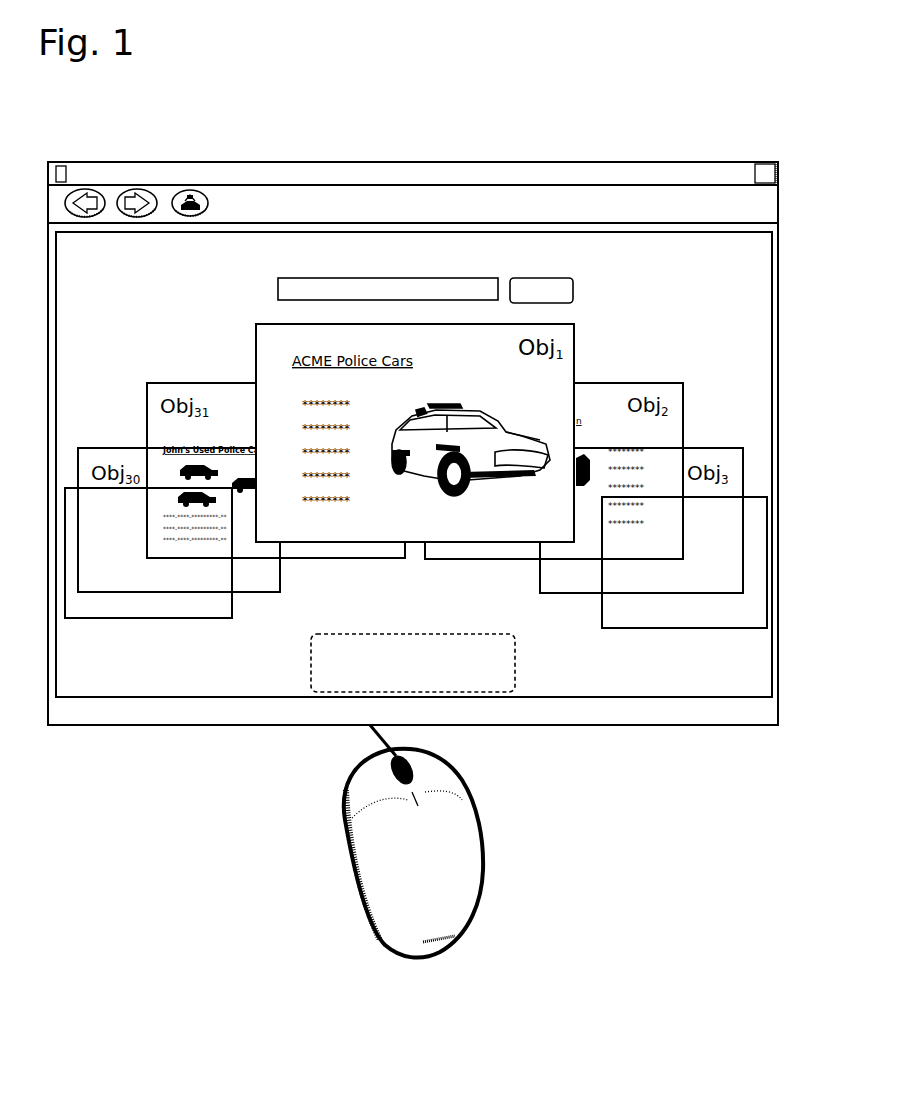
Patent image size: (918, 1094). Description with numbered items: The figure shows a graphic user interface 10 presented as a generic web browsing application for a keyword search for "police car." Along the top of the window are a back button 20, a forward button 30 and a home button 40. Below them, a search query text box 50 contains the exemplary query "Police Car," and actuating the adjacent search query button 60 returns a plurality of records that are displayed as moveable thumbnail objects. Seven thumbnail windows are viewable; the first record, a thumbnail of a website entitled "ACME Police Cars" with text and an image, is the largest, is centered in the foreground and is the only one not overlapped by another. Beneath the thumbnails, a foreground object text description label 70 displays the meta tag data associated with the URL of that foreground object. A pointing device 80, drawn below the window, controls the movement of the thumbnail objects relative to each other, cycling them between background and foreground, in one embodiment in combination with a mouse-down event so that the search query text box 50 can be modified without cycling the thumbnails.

The graphic user interface 10 is at (467, 162).
The back button 20 is at (96, 216).
The forward button 30 is at (133, 217).
The home button 40 is at (210, 200).
The search query text box 50 is at (290, 272).
The search query button 60 is at (568, 278).
The foreground object text description label 70 is at (510, 636).
The pointing device 80 is at (483, 898).